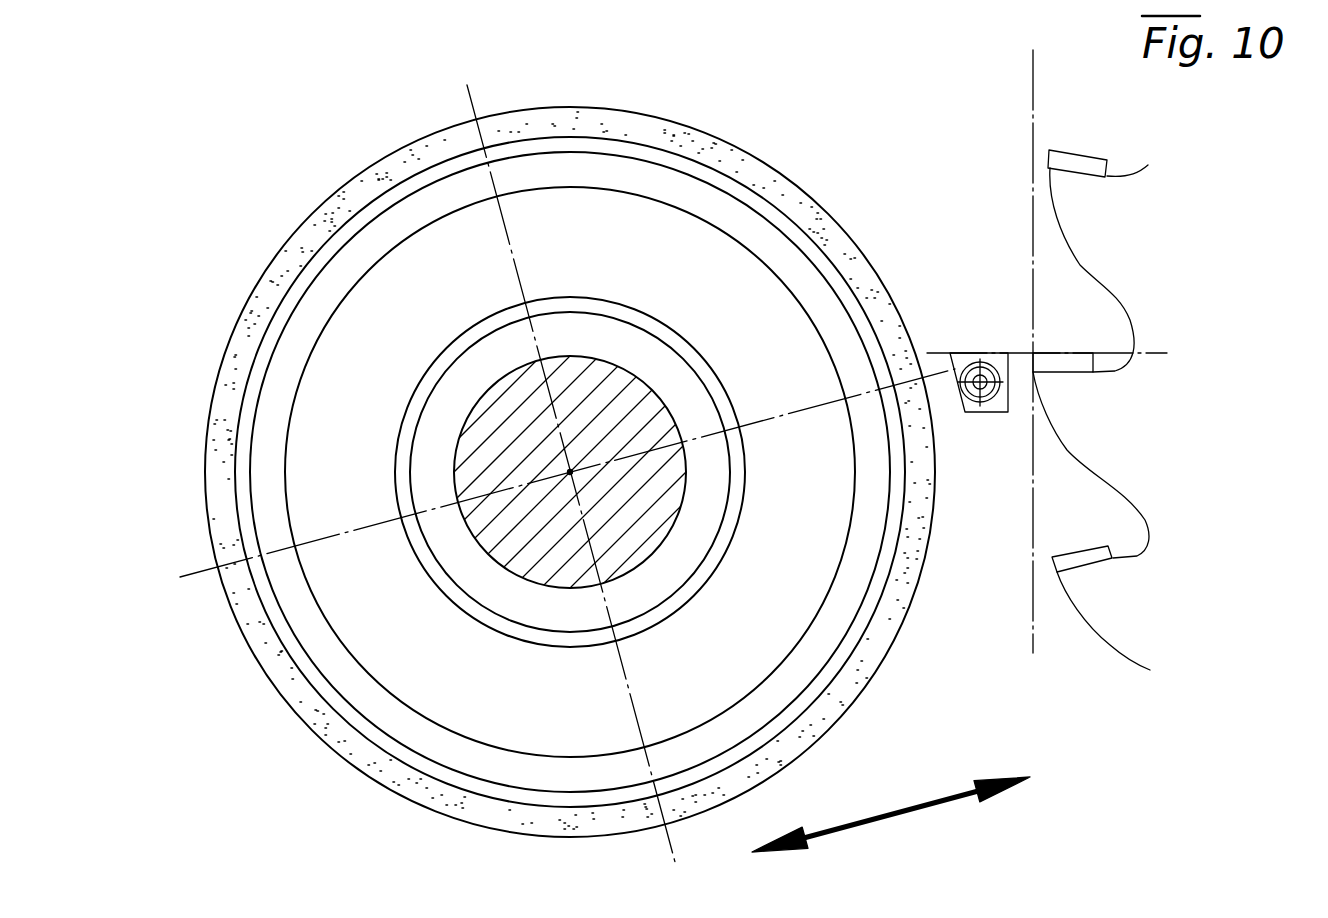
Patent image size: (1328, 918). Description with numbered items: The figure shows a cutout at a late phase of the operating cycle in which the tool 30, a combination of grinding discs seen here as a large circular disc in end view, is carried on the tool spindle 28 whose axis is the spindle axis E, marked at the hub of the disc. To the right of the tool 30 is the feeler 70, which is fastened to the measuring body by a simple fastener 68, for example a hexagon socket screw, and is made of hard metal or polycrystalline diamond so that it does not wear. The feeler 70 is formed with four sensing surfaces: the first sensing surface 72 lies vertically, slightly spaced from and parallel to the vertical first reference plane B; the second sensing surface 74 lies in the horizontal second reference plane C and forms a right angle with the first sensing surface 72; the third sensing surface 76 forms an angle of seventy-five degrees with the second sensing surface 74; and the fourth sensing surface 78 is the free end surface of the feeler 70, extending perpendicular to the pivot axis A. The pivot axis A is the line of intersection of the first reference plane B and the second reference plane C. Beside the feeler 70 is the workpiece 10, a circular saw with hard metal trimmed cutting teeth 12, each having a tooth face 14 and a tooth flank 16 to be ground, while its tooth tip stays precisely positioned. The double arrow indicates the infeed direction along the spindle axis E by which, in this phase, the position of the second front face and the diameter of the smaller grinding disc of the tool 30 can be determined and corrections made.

The workpiece 10 is at (1058, 429).
The cutting teeth 12 is at (1077, 195).
The tooth face 14 is at (1073, 150).
The tooth flank 16 is at (1048, 154).
The tool spindle 28 is at (488, 435).
The tool 30 is at (277, 727).
The dressing roller 68 is at (975, 372).
The feeler 70 is at (971, 374).
The first sensing surface 72 is at (1010, 399).
The second sensing surface 74 is at (990, 352).
The third sensing surface 76 is at (965, 411).
The fourth sensing surface 78 is at (982, 404).
The pivot axis A is at (1033, 353).
The first reference plane B is at (1033, 637).
The second reference plane C is at (1160, 352).
The spindle axis E is at (580, 472).